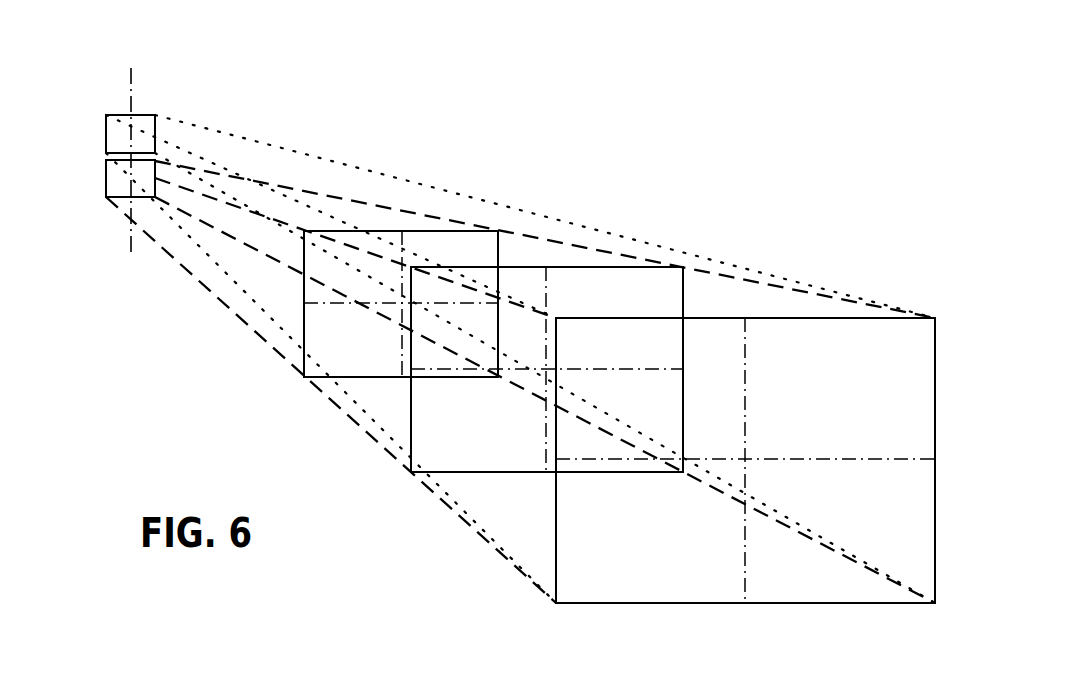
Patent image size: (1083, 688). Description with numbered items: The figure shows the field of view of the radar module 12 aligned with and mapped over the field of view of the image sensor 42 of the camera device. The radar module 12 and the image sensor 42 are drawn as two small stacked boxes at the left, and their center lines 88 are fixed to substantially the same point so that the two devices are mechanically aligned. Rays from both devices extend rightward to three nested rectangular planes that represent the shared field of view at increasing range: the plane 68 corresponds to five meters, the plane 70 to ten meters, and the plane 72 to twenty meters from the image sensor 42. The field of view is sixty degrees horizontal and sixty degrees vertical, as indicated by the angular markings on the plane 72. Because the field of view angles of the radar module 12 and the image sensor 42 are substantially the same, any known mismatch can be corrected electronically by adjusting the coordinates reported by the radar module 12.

The radar module 12 is at (107, 185).
The image sensor 42 is at (148, 115).
The center lines 88 is at (133, 70).
The plane 68 is at (304, 345).
The plane 70 is at (411, 420).
The plane 72 is at (556, 538).